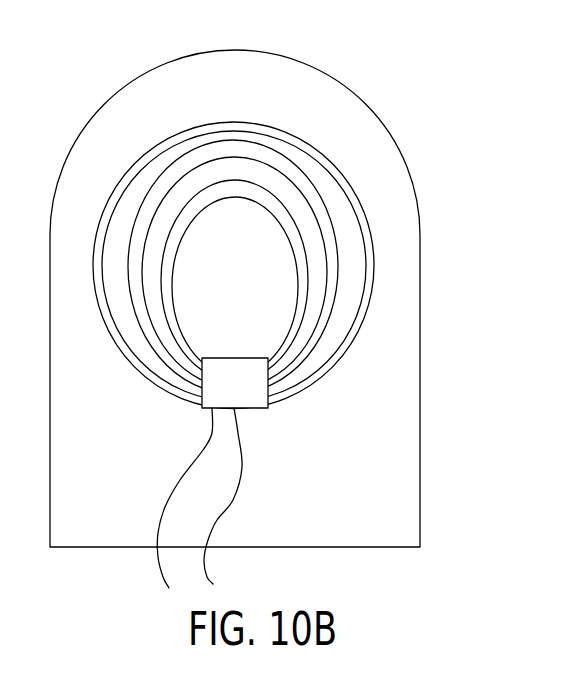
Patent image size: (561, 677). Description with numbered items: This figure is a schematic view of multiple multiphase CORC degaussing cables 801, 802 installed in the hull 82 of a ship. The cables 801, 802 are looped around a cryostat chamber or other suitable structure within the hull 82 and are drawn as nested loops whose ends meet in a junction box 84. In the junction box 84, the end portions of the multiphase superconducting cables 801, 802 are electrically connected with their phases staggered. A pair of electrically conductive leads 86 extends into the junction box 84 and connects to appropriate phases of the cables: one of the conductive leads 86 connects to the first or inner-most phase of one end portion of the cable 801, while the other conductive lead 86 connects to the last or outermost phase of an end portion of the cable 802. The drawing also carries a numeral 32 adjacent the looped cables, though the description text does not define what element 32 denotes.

The hull 82 is at (421, 313).
The multiphase CORC degaussing cable 801 is at (290, 213).
The multiphase CORC degaussing cable 802 is at (328, 332).
The coil assembly 32 is at (317, 358).
The junction box 84 is at (246, 391).
The electrically conductive leads 86 is at (180, 482).